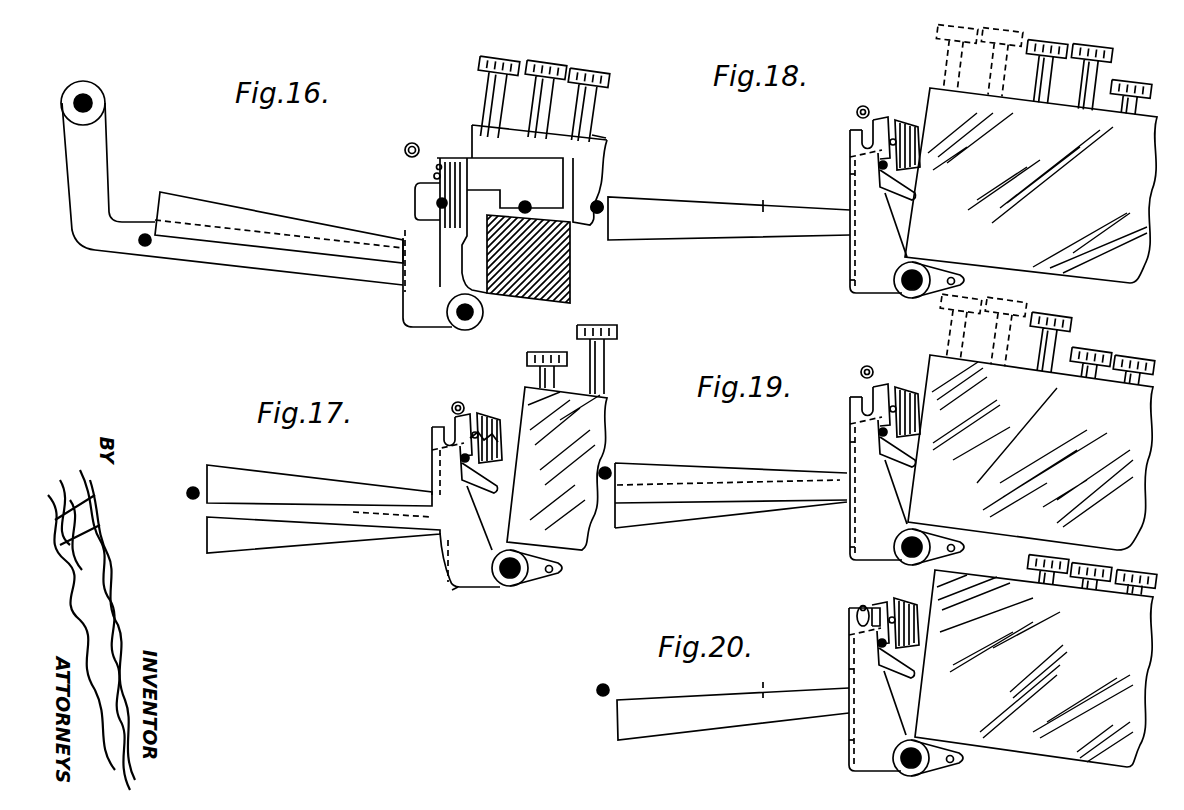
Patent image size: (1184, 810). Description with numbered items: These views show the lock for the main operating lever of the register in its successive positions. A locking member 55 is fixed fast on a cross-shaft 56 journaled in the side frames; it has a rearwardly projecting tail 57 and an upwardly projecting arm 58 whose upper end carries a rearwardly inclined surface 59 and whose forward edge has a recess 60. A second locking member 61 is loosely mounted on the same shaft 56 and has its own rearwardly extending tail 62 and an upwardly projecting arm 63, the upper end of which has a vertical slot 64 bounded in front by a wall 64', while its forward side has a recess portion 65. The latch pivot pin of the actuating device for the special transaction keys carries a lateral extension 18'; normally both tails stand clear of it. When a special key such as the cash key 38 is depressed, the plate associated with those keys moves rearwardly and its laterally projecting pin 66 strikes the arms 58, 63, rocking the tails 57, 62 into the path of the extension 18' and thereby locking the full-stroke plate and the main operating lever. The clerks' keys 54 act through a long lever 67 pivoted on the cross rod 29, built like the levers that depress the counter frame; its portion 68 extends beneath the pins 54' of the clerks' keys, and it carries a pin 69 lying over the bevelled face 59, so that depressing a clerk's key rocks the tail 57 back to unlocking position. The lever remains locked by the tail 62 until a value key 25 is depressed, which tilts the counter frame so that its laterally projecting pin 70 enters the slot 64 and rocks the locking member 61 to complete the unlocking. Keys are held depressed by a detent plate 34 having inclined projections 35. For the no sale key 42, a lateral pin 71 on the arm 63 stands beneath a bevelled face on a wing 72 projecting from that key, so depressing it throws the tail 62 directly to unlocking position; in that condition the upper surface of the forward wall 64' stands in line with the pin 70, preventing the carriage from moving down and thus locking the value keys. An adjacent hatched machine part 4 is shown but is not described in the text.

In FIG. 16, the frame 4 is at (527, 293).
In FIG. 17, the frame 4 is at (590, 545).
In FIG. 18, the frame 4 is at (1098, 272).
In FIG. 19, the frame 4 is at (935, 356).
In FIG. 20, the frame 4 is at (1020, 750).
In FIG. 16, the lateral extension 18' is at (389, 245).
In FIG. 17, the lateral extension 18' is at (175, 509).
In FIG. 18, the lateral extension 18' is at (615, 231).
In FIG. 19, the lateral extension 18' is at (632, 454).
In FIG. 20, the lateral extension 18' is at (619, 674).
In FIG. 18, the value key 25 is at (1053, 38).
In FIG. 19, the value key 25 is at (989, 306).
In FIG. 20, the value key 25 is at (1040, 560).
In FIG. 16, the cross rod 29 is at (90, 92).
In FIG. 16, the detent plate 34 is at (603, 160).
In FIG. 16, the inclined projection 35 is at (492, 132).
In FIG. 18, the cash key 38 is at (1137, 82).
In FIG. 19, the cash key 38 is at (1135, 360).
In FIG. 20, the cash key 38 is at (1135, 572).
In FIG. 17, the no sale key 42 is at (527, 360).
In FIG. 16, the clerks' keys 54 is at (603, 105).
In FIG. 17, the clerks' keys 54 is at (615, 359).
In FIG. 18, the clerks' keys 54 is at (1089, 66).
In FIG. 19, the clerks' keys 54 is at (1071, 345).
In FIG. 20, the clerks' keys 54 is at (1089, 562).
In FIG. 16, the pin 54' is at (628, 132).
In FIG. 16, the locking member 55 is at (413, 322).
In FIG. 17, the locking member 55 is at (455, 591).
In FIG. 18, the locking member 55 is at (850, 280).
In FIG. 19, the locking member 55 is at (850, 546).
In FIG. 20, the locking member 55 is at (849, 740).
In FIG. 16, the cross-shaft 56 is at (470, 322).
In FIG. 17, the cross-shaft 56 is at (525, 585).
In FIG. 18, the cross-shaft 56 is at (902, 293).
In FIG. 19, the cross-shaft 56 is at (918, 564).
In FIG. 20, the cross-shaft 56 is at (922, 771).
In FIG. 16, the tail 57 is at (234, 210).
In FIG. 17, the tail 57 is at (322, 461).
In FIG. 18, the tail 57 is at (763, 200).
In FIG. 19, the tail 57 is at (690, 515).
In FIG. 16, the arm 58 is at (415, 200).
In FIG. 17, the arm 58 is at (510, 520).
In FIG. 18, the arm 58 is at (850, 174).
In FIG. 19, the arm 58 is at (850, 442).
In FIG. 20, the arm 58 is at (849, 669).
In FIG. 16, the inclined surface 59 is at (433, 177).
In FIG. 18, the inclined surface 59 is at (850, 156).
In FIG. 19, the inclined surface 59 is at (850, 424).
In FIG. 20, the inclined surface 59 is at (849, 636).
In FIG. 16, the recess 60 is at (437, 206).
In FIG. 17, the recess 60 is at (468, 462).
In FIG. 18, the recess 60 is at (887, 168).
In FIG. 19, the recess 60 is at (887, 436).
In FIG. 20, the recess 60 is at (886, 647).
In FIG. 17, the locking member 61 is at (443, 545).
In FIG. 18, the locking member 61 is at (850, 253).
In FIG. 19, the locking member 61 is at (850, 526).
In FIG. 20, the locking member 61 is at (849, 760).
In FIG. 17, the tail 62 is at (290, 546).
In FIG. 18, the tail 62 is at (660, 205).
In FIG. 19, the tail 62 is at (675, 470).
In FIG. 20, the tail 62 is at (660, 700).
In FIG. 17, the arm 63 is at (432, 452).
In FIG. 18, the arm 63 is at (850, 190).
In FIG. 19, the arm 63 is at (850, 406).
In FIG. 20, the arm 63 is at (849, 650).
In FIG. 17, the vertical slot 64 is at (427, 425).
In FIG. 18, the vertical slot 64 is at (840, 129).
In FIG. 19, the vertical slot 64 is at (843, 395).
In FIG. 20, the vertical slot 64 is at (836, 616).
In FIG. 17, the forward wall 64' is at (479, 418).
In FIG. 18, the forward wall 64' is at (904, 110).
In FIG. 19, the forward wall 64' is at (906, 383).
In FIG. 20, the forward wall 64' is at (897, 616).
In FIG. 17, the recess portion 65 is at (468, 488).
In FIG. 18, the recess portion 65 is at (892, 213).
In FIG. 19, the recess portion 65 is at (898, 476).
In FIG. 20, the recess portion 65 is at (893, 690).
In FIG. 16, the pin 66 is at (462, 196).
In FIG. 17, the pin 66 is at (493, 478).
In FIG. 18, the pin 66 is at (913, 198).
In FIG. 19, the pin 66 is at (915, 466).
In FIG. 20, the pin 66 is at (913, 678).
In FIG. 16, the long lever 67 is at (258, 258).
In FIG. 20, the long lever 67 is at (751, 682).
In FIG. 16, the portion 68 is at (500, 185).
In FIG. 16, the pin 69 is at (439, 167).
In FIG. 17, the pin 69 is at (480, 437).
In FIG. 18, the pin 69 is at (897, 140).
In FIG. 19, the pin 69 is at (897, 411).
In FIG. 20, the pin 69 is at (895, 622).
In FIG. 16, the pin 70 is at (408, 136).
In FIG. 17, the pin 70 is at (454, 403).
In FIG. 18, the pin 70 is at (866, 106).
In FIG. 19, the pin 70 is at (872, 367).
In FIG. 20, the pin 70 is at (856, 606).
In FIG. 18, the lateral pin 71 is at (900, 121).
In FIG. 19, the lateral pin 71 is at (905, 383).
In FIG. 20, the lateral pin 71 is at (918, 606).
In FIG. 17, the wing 72 is at (486, 424).